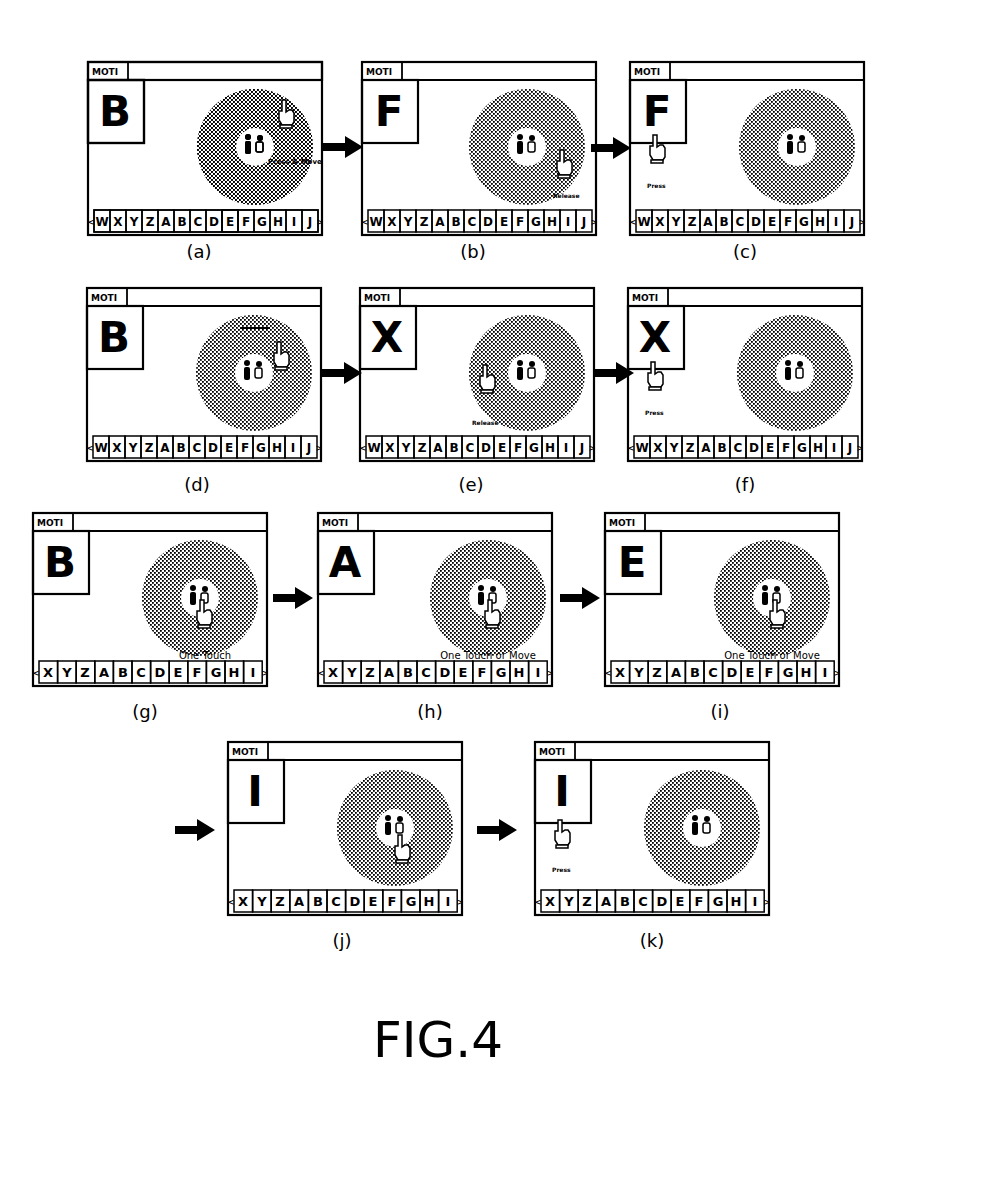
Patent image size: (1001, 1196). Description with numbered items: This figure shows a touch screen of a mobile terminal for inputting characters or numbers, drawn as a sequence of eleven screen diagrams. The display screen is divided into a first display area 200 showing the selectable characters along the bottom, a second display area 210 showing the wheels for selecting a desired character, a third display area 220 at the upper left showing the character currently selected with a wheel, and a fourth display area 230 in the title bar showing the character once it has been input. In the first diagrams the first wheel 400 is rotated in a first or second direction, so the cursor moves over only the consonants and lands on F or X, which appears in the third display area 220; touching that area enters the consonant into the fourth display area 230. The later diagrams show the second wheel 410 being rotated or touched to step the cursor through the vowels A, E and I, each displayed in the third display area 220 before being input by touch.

The first display area 200 is at (231, 232).
The second display area 210 is at (308, 203).
The third display area 220 is at (92, 98).
The fourth display area 230 is at (156, 62).
The first wheel 400 is at (305, 112).
The second wheel 410 is at (255, 128).